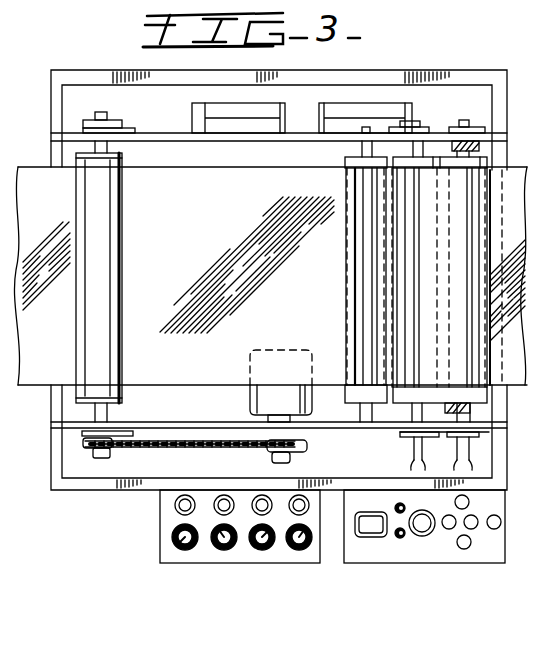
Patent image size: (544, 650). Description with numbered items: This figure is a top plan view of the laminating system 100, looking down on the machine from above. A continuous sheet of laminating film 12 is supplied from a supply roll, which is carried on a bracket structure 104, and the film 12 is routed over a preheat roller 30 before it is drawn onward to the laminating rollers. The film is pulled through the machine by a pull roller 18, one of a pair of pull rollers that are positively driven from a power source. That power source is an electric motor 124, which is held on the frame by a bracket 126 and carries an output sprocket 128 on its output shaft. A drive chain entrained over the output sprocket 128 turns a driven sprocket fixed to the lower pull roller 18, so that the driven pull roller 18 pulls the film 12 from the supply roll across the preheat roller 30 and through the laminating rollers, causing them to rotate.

The laminating system 100 is at (96, 539).
The film 12 is at (218, 190).
The pull roller 18 is at (83, 203).
The preheat roller 30 is at (428, 163).
The bracket structure 104 is at (505, 147).
The electric motor 124 is at (248, 401).
The bracket 126 is at (293, 421).
The output sprocket 128 is at (290, 451).